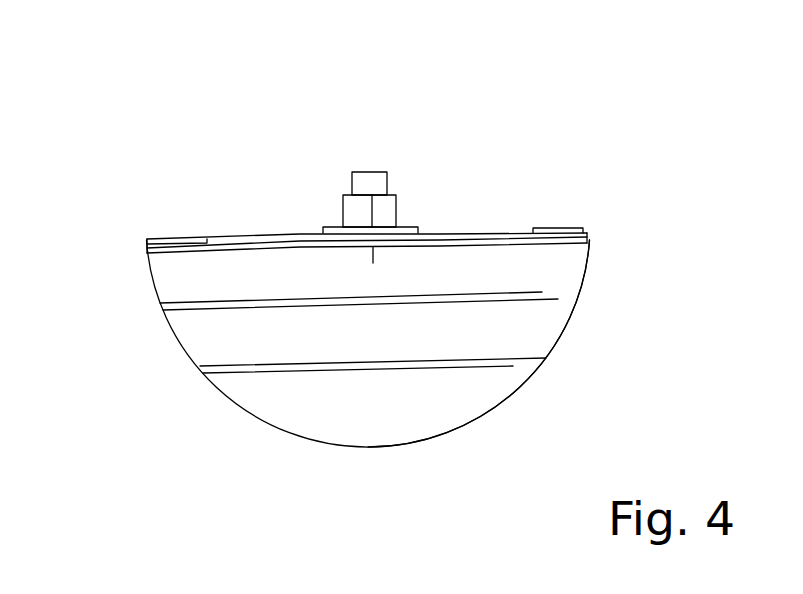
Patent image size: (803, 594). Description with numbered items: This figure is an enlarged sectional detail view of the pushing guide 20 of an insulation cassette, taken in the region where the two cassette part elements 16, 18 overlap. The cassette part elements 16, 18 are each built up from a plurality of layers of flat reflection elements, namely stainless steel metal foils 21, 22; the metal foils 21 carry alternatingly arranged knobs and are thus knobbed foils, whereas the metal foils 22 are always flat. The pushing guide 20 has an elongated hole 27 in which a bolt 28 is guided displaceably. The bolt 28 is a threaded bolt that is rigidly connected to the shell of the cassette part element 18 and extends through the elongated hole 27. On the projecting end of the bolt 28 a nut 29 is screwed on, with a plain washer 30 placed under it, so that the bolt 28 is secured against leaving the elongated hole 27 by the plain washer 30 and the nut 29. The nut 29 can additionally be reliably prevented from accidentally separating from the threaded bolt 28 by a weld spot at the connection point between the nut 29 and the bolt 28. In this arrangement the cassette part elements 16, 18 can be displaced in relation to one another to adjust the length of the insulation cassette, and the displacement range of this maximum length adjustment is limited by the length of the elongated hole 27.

The cassette part element 16 is at (122, 357).
The cassette part element 18 is at (628, 334).
The pushing guide 20 is at (266, 110).
The metal foil 21 is at (196, 304).
The metal foil 22 is at (218, 368).
The elongated hole 27 is at (248, 222).
The bolt 28 is at (378, 180).
The nut 29 is at (385, 212).
The plain washer 30 is at (420, 226).